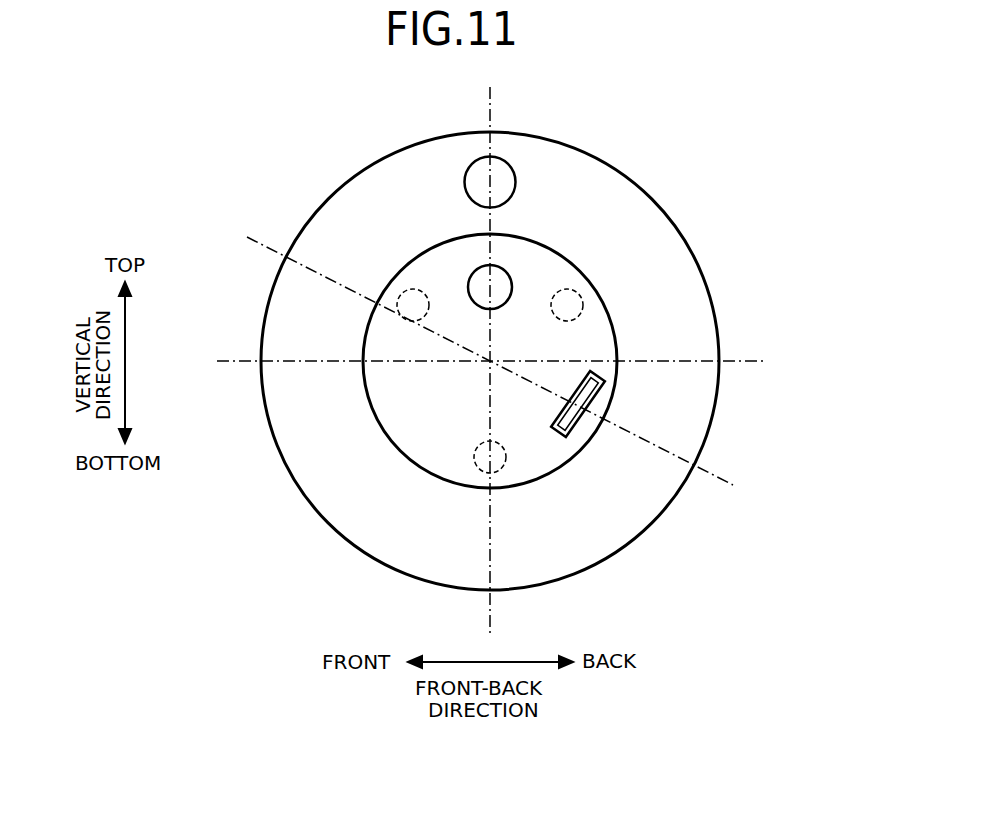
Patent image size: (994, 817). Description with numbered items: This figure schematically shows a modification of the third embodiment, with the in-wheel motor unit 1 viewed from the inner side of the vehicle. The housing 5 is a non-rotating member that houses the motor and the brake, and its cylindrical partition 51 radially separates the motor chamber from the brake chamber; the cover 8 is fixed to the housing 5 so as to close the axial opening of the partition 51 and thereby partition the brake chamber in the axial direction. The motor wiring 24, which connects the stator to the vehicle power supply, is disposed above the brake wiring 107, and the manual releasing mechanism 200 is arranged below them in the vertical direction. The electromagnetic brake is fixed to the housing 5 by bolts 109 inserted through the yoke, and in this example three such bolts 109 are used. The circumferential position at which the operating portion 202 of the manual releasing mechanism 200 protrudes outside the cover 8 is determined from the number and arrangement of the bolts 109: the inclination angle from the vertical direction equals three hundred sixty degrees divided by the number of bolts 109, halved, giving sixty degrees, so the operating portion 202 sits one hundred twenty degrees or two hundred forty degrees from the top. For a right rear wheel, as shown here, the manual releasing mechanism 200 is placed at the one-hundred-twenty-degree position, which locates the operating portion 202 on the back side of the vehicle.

The in-wheel motor unit 1 is at (678, 160).
The housing 5 is at (256, 302).
The cover 8 is at (402, 412).
The motor wiring 24 is at (516, 177).
The cylindrical partition 51 is at (425, 177).
The brake wiring 107 is at (513, 280).
The bolt 109 is at (402, 292).
The manual releasing mechanism 200 is at (678, 416).
The operating portion 202 is at (590, 397).